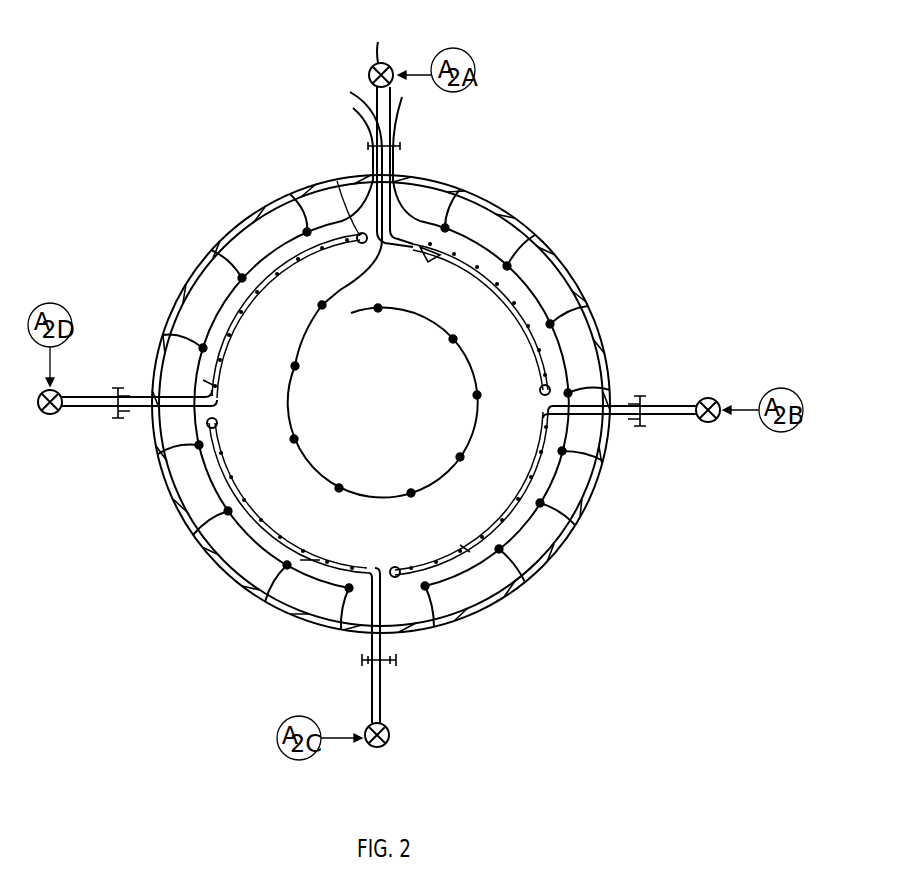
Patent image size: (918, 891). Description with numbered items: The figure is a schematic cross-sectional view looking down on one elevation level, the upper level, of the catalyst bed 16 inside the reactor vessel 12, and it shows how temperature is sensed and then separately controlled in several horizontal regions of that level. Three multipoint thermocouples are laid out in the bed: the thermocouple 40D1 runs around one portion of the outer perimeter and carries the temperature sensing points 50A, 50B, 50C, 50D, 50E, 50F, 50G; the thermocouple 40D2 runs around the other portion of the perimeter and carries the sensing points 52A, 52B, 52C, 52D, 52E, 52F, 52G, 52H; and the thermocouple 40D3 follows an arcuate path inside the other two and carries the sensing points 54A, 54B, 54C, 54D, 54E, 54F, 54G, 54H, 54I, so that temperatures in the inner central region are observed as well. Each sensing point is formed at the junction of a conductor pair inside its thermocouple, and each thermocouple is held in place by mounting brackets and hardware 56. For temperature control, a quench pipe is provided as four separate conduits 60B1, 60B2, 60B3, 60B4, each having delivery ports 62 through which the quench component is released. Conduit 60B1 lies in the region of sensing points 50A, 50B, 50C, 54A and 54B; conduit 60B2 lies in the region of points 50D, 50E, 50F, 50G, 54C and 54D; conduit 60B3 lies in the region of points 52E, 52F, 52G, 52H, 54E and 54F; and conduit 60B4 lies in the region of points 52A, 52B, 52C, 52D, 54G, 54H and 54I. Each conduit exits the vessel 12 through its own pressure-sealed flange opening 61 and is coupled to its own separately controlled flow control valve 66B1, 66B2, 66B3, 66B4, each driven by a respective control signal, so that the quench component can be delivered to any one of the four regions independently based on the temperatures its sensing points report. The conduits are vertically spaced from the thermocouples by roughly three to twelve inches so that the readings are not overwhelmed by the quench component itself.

The vessel 12 is at (580, 268).
The catalyst bed 16 is at (497, 600).
The multipoint thermocouple 40D1 is at (240, 233).
The multipoint thermocouple 40D2 is at (403, 103).
The multipoint thermocouple 40D3 is at (356, 90).
The temperature sensing point 50A is at (287, 194).
The temperature sensing point 50B is at (211, 250).
The temperature sensing point 50C is at (185, 335).
The temperature sensing point 50D is at (168, 460).
The temperature sensing point 50E is at (193, 535).
The temperature sensing point 50F is at (265, 602).
The temperature sensing point 50G is at (341, 630).
The temperature sensing point 52A is at (460, 189).
The temperature sensing point 52B is at (535, 235).
The temperature sensing point 52C is at (588, 306).
The temperature sensing point 52D is at (580, 392).
The temperature sensing point 52E is at (590, 462).
The temperature sensing point 52F is at (575, 525).
The temperature sensing point 52G is at (525, 582).
The temperature sensing point 52H is at (434, 627).
The temperature sensing point 54A is at (322, 305).
The temperature sensing point 54B is at (295, 366).
The temperature sensing point 54C is at (294, 439).
The temperature sensing point 54D is at (339, 488).
The temperature sensing point 54E is at (411, 493).
The temperature sensing point 54F is at (460, 457).
The temperature sensing point 54G is at (477, 395).
The temperature sensing point 54H is at (453, 339).
The temperature sensing point 54I is at (378, 308).
The mounting brackets and hardware 56 is at (360, 233).
The quench pipe conduit 60B1 is at (293, 295).
The quench pipe conduit 60B2 is at (223, 455).
The quench pipe conduit 60B3 is at (420, 556).
The quench pipe conduit 60B4 is at (502, 292).
The pressure-sealed flange opening 61 is at (398, 166).
The delivery port 62 is at (435, 258).
The flow control valve 66B1 is at (384, 130).
The flow control valve 66B2 is at (50, 414).
The flow control valve 66B3 is at (389, 735).
The flow control valve 66B4 is at (712, 422).